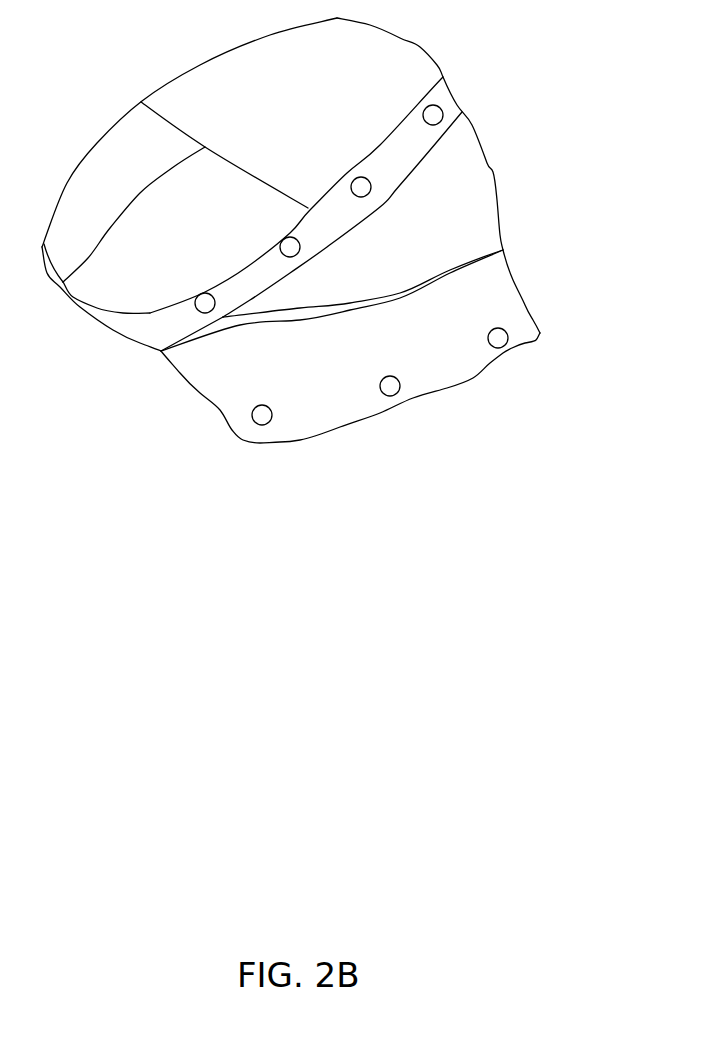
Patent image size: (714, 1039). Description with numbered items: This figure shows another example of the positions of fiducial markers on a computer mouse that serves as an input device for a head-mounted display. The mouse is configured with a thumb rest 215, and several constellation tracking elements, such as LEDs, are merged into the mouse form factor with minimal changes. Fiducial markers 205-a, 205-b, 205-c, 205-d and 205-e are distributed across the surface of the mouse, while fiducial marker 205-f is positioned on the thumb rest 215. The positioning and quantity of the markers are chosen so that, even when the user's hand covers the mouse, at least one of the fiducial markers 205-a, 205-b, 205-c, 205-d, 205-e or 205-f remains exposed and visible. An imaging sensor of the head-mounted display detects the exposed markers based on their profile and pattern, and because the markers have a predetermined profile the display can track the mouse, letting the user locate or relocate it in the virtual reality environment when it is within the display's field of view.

The fiducial marker 205-a is at (205, 303).
The fiducial marker 205-b is at (272, 420).
The fiducial marker 205-c is at (290, 247).
The fiducial marker 205-d is at (359, 183).
The fiducial marker 205-e is at (437, 115).
The fiducial marker 205-f is at (503, 347).
The thumb rest 215 is at (462, 297).